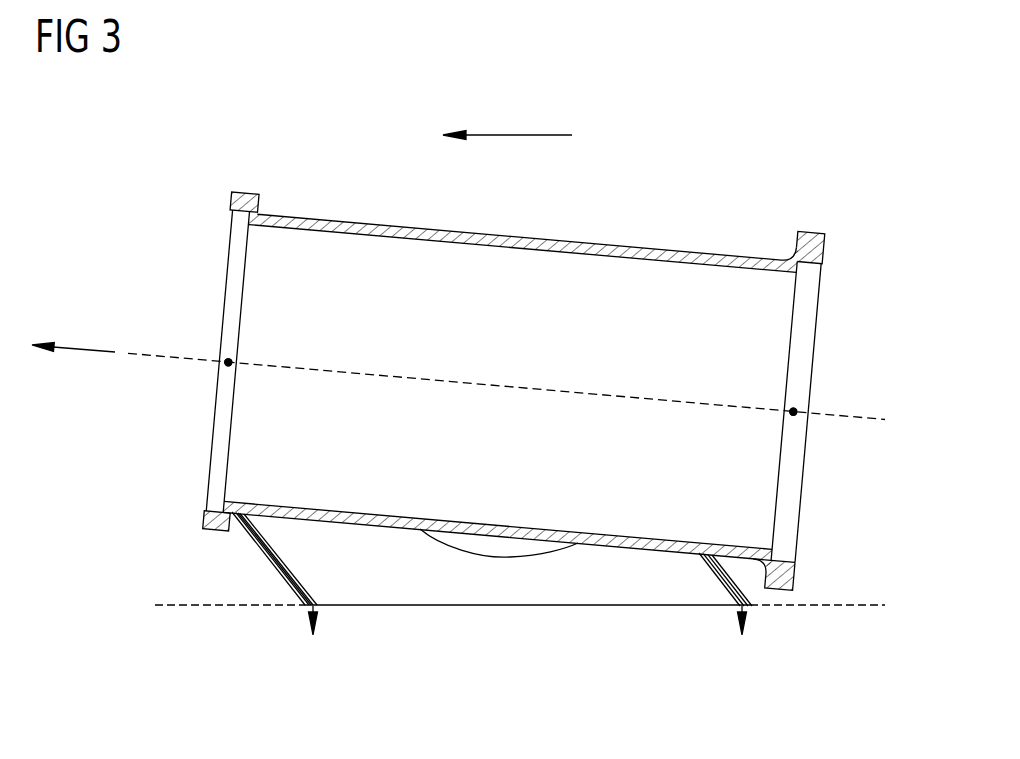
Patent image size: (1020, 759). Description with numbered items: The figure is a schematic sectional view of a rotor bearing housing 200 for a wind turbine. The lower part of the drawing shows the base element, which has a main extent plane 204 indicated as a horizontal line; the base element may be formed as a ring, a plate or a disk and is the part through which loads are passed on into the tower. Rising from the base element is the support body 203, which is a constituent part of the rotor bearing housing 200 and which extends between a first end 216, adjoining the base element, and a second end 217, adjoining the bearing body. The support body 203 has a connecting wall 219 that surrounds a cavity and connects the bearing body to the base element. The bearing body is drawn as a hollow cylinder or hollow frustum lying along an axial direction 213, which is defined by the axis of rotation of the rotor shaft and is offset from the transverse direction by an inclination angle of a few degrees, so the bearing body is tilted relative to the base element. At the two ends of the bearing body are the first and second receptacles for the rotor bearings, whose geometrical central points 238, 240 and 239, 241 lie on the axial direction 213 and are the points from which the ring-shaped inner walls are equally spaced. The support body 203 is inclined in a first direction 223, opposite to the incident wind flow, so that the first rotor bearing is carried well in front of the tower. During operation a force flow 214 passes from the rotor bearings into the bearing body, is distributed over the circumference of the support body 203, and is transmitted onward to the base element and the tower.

The rotor bearing housing 200 is at (724, 112).
The support body 203 is at (259, 544).
The main extent plane 204 is at (862, 608).
The axial direction 213 is at (87, 348).
The force flow 214 is at (308, 609).
The first end of the support body 216 is at (332, 577).
The second end of the support body 217 is at (682, 572).
The connecting wall 219 is at (288, 583).
The first direction 223 is at (508, 134).
The geometrical central point of the first receptacle 238 is at (230, 364).
The geometrical central point of the second receptacle 239 is at (792, 413).
The geometrical central point of the first rotor bearing 240 is at (228, 362).
The geometrical central point of the second rotor bearing 241 is at (793, 411).